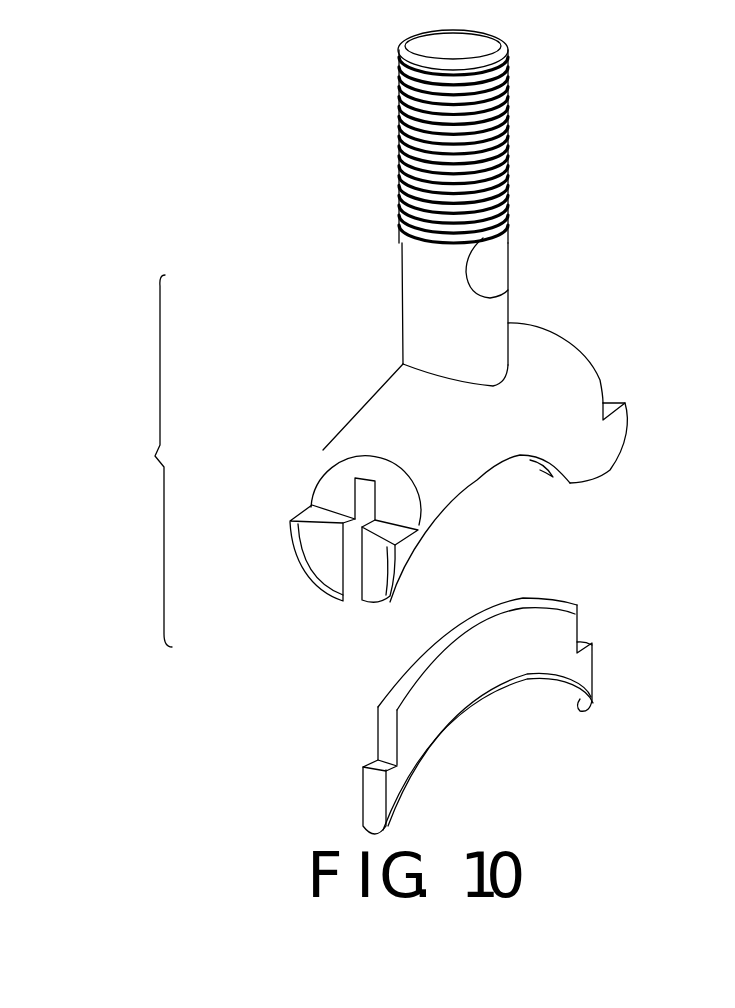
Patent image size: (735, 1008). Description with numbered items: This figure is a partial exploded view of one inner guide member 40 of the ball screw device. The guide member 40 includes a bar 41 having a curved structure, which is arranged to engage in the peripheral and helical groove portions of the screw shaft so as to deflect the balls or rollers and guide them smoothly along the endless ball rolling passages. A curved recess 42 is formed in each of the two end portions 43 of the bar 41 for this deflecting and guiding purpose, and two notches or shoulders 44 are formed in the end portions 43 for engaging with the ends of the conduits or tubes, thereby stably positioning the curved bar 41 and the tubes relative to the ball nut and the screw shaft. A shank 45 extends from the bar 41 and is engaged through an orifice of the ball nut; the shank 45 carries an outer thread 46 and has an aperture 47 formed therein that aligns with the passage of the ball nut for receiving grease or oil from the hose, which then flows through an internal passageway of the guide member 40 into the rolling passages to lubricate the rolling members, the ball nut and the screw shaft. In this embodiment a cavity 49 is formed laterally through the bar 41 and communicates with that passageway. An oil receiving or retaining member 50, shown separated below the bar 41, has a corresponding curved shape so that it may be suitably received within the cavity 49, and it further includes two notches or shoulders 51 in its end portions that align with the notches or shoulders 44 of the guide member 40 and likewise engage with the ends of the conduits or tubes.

The inner guide member 40 is at (532, 90).
The bar 41 is at (366, 398).
The curved recess 42 is at (322, 543).
The end portion 43 is at (627, 433).
The notch or shoulder 44 is at (325, 484).
The shank 45 is at (402, 295).
The outer thread 46 is at (495, 143).
The aperture 47 is at (495, 272).
The cavity 49 is at (360, 578).
The oil receiving or retaining member 50 is at (603, 665).
The notch or shoulder 51 is at (370, 762).